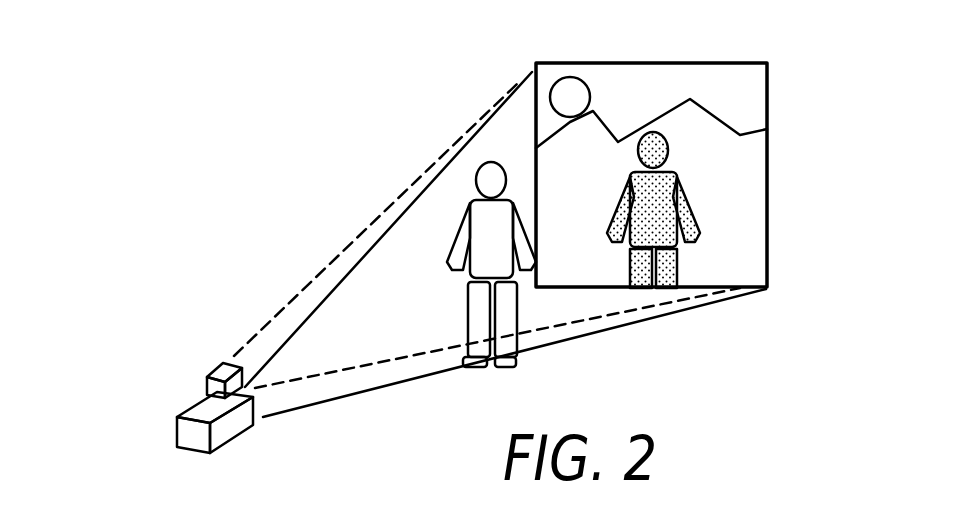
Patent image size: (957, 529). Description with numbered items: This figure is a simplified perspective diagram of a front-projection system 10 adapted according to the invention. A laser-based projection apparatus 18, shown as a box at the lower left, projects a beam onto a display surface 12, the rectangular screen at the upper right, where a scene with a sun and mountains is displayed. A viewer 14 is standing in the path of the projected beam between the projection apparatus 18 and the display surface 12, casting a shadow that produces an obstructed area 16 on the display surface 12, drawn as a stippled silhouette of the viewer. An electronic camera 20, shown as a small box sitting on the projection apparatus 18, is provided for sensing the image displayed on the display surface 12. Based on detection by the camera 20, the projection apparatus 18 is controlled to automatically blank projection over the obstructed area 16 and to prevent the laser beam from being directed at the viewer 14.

The front-projection system 10 is at (203, 205).
The display surface 12 is at (767, 260).
The viewer 14 is at (460, 232).
The obstructed area 16 is at (681, 197).
The projection apparatus 18 is at (187, 428).
The electronic camera 20 is at (215, 372).